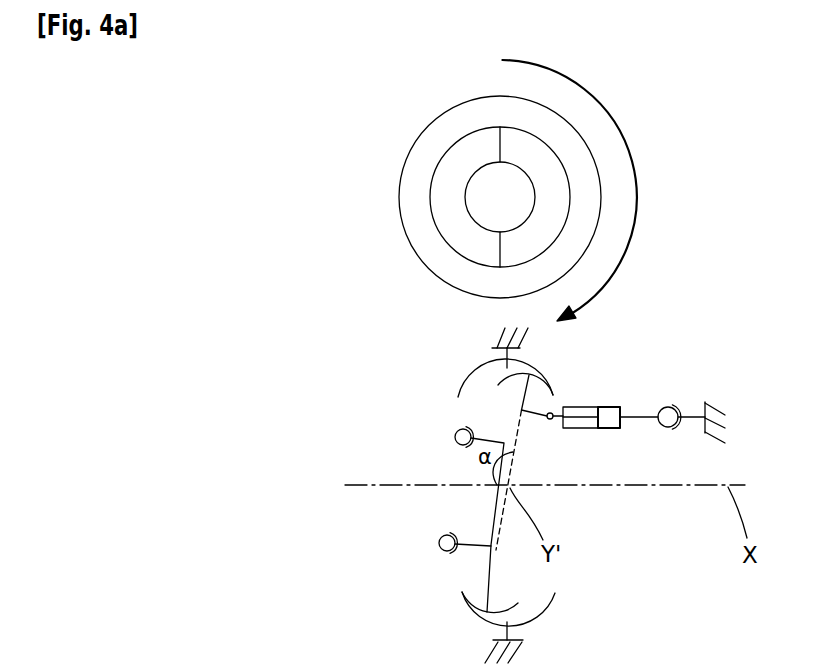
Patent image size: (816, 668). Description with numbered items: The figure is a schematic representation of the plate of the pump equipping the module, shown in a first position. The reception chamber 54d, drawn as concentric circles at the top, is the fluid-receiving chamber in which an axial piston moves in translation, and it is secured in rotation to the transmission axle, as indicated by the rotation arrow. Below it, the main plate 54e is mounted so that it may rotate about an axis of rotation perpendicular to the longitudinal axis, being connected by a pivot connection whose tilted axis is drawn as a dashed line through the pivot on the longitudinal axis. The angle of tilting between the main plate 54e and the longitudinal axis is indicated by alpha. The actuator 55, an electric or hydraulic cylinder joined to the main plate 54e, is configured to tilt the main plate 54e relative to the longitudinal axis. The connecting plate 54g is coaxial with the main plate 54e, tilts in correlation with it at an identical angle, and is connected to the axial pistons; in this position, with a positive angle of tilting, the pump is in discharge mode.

The reception chamber 54d is at (452, 196).
The main plate 54e is at (518, 435).
The connecting plate 54g is at (490, 520).
The actuator 55 is at (608, 410).